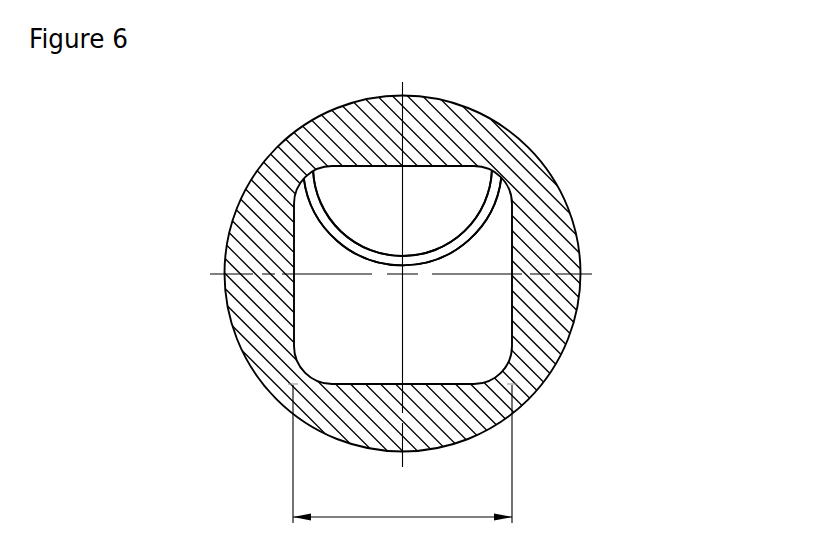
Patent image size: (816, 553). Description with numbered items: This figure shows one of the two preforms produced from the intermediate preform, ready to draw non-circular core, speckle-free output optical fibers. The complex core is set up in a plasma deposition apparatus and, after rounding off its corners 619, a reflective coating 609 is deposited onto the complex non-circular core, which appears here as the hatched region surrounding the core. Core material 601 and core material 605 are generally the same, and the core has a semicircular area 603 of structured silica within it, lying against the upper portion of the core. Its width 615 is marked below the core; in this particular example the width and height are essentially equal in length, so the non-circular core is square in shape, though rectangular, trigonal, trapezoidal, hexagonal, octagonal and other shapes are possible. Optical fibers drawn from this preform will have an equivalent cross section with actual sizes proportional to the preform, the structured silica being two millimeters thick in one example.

The core material 601 is at (402, 214).
The semicircular area of structured silica 603 is at (465, 242).
The core material 605 is at (403, 275).
The reflective coating 609 is at (542, 203).
The width 615 is at (402, 453).
The rounded corners 619 is at (502, 180).